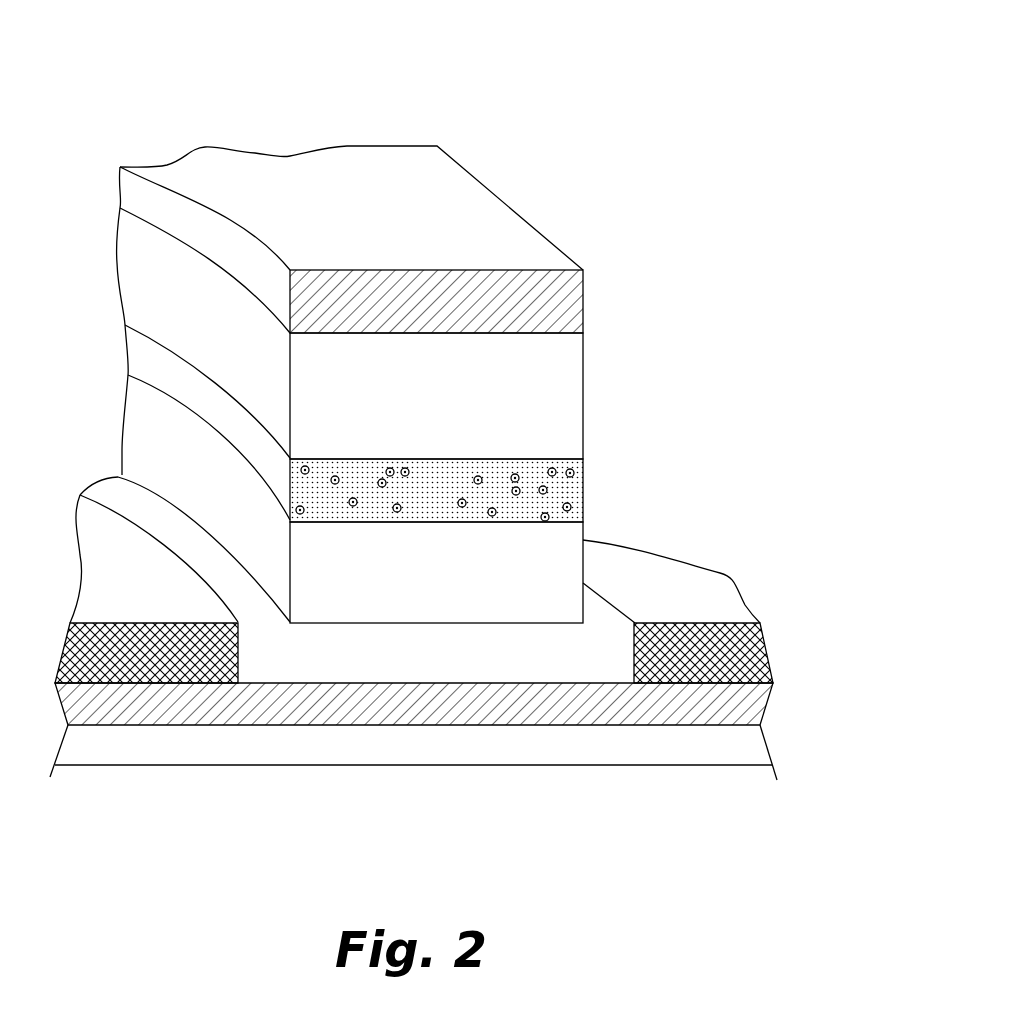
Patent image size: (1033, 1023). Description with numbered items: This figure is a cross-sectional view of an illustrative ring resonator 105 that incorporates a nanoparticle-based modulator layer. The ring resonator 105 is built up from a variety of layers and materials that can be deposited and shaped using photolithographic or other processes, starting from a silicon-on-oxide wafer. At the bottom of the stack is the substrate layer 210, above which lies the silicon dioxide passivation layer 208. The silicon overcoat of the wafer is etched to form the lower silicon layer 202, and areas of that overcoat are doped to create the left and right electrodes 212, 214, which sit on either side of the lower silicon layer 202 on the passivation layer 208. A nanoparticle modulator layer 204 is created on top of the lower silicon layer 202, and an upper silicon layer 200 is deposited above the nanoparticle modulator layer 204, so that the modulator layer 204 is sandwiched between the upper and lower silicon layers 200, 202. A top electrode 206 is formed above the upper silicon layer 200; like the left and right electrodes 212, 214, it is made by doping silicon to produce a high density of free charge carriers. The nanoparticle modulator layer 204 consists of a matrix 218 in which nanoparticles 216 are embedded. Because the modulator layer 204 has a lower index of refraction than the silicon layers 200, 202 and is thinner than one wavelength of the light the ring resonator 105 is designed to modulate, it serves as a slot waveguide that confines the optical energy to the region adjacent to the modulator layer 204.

The ring resonator 105 is at (590, 93).
The upper silicon layer 200 is at (417, 406).
The lower silicon layer 202 is at (415, 594).
The nanoparticle modulator layer 204 is at (471, 482).
The top electrode 206 is at (414, 313).
The silicon dioxide passivation layer 208 is at (419, 714).
The substrate layer 210 is at (419, 756).
The left electrode 212 is at (113, 663).
The right electrode 214 is at (681, 666).
The nanoparticles 216 is at (577, 473).
The matrix 218 is at (572, 493).